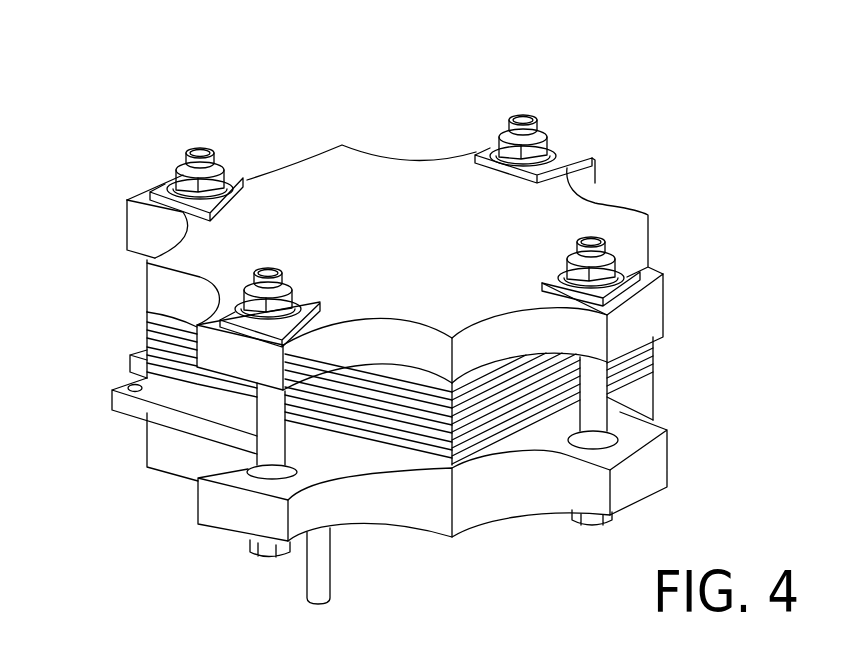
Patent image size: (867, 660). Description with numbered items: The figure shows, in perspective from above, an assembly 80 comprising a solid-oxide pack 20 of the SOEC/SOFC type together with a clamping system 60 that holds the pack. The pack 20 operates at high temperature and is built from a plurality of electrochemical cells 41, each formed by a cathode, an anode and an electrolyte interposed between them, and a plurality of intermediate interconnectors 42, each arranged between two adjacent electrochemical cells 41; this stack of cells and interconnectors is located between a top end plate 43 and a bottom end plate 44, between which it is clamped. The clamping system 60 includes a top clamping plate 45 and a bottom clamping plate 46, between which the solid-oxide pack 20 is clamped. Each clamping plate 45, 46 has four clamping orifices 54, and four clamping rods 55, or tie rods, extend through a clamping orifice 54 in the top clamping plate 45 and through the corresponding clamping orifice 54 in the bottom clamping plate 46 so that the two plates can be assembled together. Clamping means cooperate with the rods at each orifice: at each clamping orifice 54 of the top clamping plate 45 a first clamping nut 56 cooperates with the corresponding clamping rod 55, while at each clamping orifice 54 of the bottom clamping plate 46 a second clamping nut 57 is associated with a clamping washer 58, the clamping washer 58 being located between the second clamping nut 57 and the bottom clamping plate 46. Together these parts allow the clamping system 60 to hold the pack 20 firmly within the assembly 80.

The solid-oxide pack 20 is at (68, 317).
The electrochemical cell 41 is at (147, 337).
The intermediate interconnector 42 is at (128, 365).
The top end plate 43 is at (143, 318).
The bottom end plate 44 is at (127, 407).
The top clamping plate 45 is at (145, 222).
The bottom clamping plate 46 is at (235, 512).
The clamping orifice 54 is at (338, 483).
The clamping rod 55 is at (210, 477).
The first clamping nut 56 is at (273, 555).
The second clamping nut 57 is at (190, 152).
The clamping washer 58 is at (172, 190).
The clamping system 60 is at (678, 180).
The assembly 80 is at (80, 108).